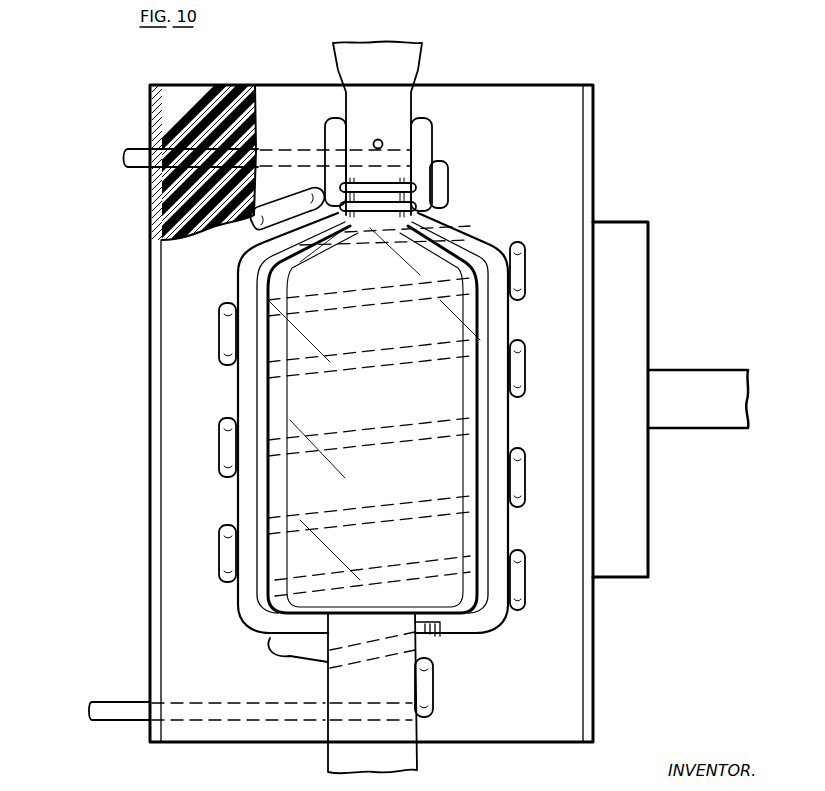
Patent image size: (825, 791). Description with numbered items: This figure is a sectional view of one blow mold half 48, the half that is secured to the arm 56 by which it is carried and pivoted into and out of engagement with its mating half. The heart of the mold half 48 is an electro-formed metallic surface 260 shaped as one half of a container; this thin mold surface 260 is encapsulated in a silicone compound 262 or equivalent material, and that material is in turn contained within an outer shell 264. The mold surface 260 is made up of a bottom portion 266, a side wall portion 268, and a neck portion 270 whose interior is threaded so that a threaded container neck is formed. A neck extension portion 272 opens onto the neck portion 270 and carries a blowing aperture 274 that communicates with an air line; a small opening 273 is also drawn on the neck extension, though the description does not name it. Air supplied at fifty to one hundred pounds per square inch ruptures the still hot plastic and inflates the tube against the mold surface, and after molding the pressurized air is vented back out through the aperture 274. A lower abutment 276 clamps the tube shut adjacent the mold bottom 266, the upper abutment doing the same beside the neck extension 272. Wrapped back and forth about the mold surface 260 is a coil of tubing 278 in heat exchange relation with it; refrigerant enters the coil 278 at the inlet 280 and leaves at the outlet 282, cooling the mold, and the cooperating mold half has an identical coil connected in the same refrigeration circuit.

The blow mold half 48 is at (484, 50).
The arm 56 is at (735, 403).
The electro-formed metallic surface 260 is at (463, 256).
The silicone compound 262 is at (565, 101).
The outer shell 264 is at (583, 136).
The bottom portion 266 is at (466, 620).
The side wall portion 268 is at (500, 529).
The neck portion 270 is at (425, 196).
The neck extension portion 272 is at (326, 134).
The pin hole 273 is at (382, 141).
The blowing aperture 274 is at (334, 120).
The lower abutment 276 is at (340, 679).
The coil of tubing 278 is at (230, 418).
The refrigerant inlet 280 is at (120, 158).
The refrigerant outlet 282 is at (85, 713).